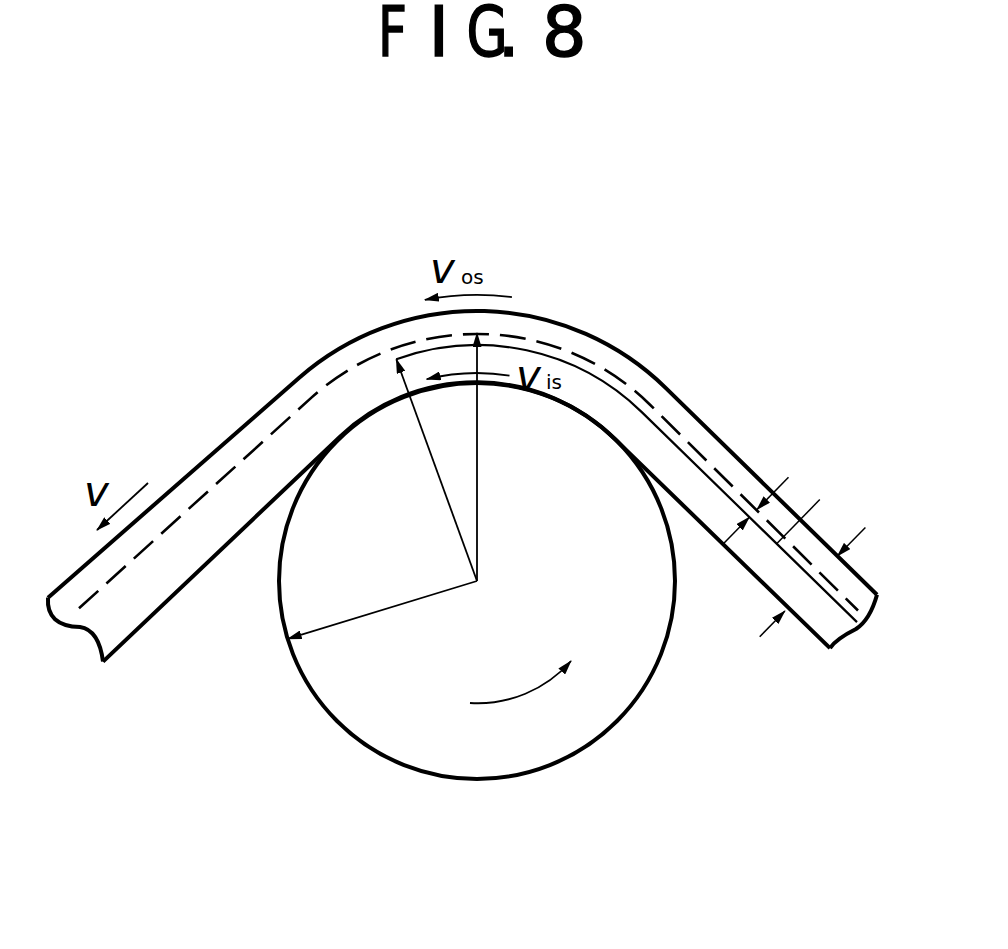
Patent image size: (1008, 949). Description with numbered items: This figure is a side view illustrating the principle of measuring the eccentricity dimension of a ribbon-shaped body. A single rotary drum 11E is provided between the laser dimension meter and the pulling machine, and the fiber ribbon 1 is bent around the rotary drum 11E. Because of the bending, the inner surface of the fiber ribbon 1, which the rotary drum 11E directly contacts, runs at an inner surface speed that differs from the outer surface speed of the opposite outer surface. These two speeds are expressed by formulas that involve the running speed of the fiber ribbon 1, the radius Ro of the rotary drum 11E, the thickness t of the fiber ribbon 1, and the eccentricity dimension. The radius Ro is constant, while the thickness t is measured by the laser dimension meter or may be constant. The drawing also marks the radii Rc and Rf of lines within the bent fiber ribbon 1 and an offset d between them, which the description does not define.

The fiber ribbon 1 is at (628, 353).
The rotary drum 11E is at (606, 709).
The radius of film center line Rc is at (436, 470).
The radius of neutral line Rf is at (499, 457).
The radius of the rotary drum Ro is at (382, 616).
The thickness of the fiber ribbon t is at (819, 529).
The neutral line offset d is at (767, 480).